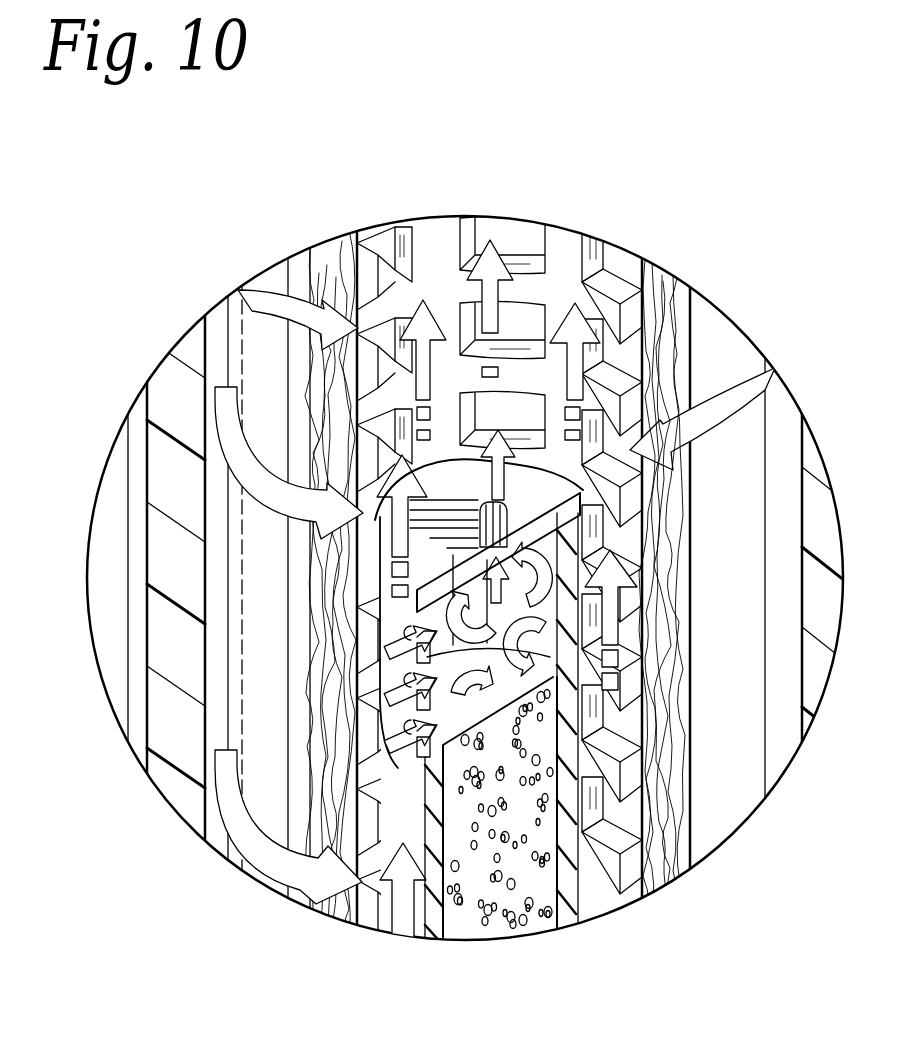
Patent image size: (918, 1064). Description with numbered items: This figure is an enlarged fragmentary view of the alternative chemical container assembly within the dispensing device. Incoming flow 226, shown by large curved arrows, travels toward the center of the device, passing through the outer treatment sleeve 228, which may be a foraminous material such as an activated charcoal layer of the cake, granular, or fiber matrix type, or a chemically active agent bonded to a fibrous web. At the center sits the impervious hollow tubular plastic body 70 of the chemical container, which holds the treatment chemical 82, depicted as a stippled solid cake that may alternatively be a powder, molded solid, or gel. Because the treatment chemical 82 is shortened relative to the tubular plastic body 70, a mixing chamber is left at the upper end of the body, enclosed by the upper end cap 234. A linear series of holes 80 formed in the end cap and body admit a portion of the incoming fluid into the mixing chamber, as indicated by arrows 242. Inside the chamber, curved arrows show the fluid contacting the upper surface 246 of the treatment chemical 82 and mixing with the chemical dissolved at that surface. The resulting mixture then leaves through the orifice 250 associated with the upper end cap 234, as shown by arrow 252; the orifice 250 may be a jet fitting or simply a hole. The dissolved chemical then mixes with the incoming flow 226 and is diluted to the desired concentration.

The incoming flow 226 is at (247, 462).
The orifice 250 is at (487, 500).
The arrow 252 is at (497, 433).
The upper end cap 234 is at (552, 505).
The arrows 242 is at (413, 658).
The holes 80 is at (413, 625).
The upper surface 246 is at (537, 677).
The outer treatment sleeve 228 is at (680, 638).
The treatment chemical 82 is at (498, 900).
The tubular plastic body 70 is at (562, 900).